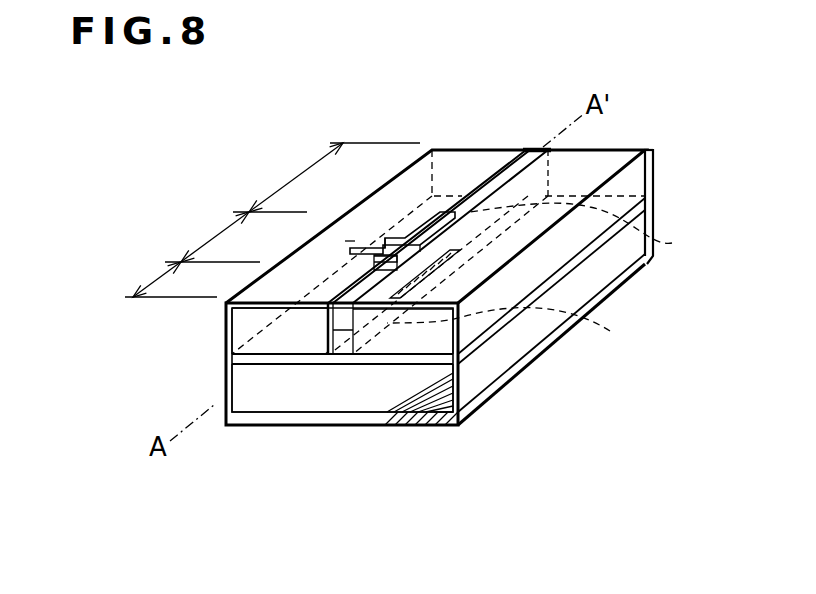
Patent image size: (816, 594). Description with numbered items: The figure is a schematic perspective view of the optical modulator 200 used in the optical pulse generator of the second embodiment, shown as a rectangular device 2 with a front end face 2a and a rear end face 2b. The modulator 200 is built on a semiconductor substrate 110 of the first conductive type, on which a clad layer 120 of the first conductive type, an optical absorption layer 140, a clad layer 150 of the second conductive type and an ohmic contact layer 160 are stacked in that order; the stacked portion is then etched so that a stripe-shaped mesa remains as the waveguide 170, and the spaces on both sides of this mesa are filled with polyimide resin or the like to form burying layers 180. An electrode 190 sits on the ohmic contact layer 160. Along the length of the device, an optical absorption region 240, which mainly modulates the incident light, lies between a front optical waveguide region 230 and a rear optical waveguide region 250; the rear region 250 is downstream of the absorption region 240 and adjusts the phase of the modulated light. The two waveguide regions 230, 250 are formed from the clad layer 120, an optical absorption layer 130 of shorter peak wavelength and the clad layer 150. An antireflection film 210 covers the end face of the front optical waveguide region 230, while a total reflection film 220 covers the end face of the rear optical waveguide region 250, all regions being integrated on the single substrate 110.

The optical device 2 is at (506, 101).
The front end portion 2a is at (460, 393).
The rear end portion 2b is at (655, 168).
The semiconductor substrate 110 is at (487, 368).
The clad layer 120 is at (498, 327).
The optical absorption layer 130 is at (672, 243).
The optical absorption layer 140 is at (455, 267).
The clad layer 150 is at (340, 322).
The ohmic contact layer 160 is at (374, 258).
The waveguide 170 is at (327, 352).
The burying layers 180 is at (350, 238).
The electrode 190 is at (386, 235).
The optical modulator 200 is at (221, 182).
The antireflection film 210 is at (437, 428).
The total reflection film 220 is at (655, 189).
The front optical waveguide region 230 is at (128, 277).
The optical absorption region 240 is at (187, 243).
The rear optical waveguide region 250 is at (289, 183).